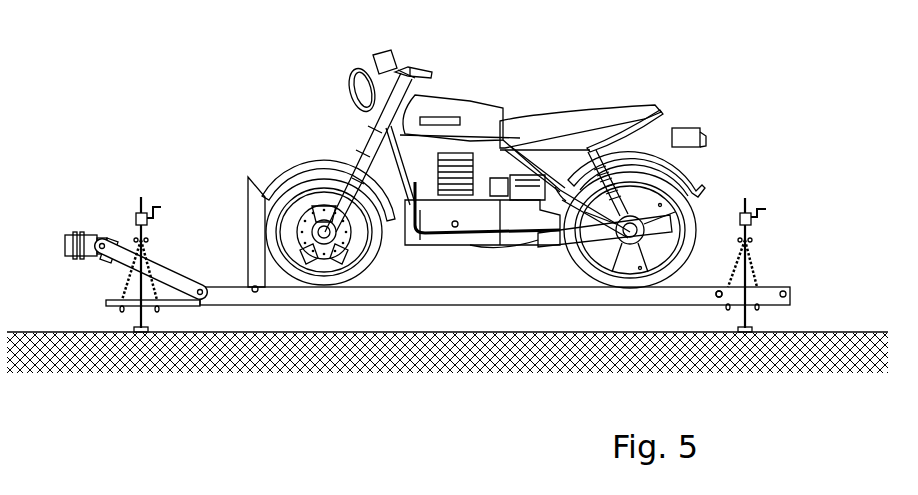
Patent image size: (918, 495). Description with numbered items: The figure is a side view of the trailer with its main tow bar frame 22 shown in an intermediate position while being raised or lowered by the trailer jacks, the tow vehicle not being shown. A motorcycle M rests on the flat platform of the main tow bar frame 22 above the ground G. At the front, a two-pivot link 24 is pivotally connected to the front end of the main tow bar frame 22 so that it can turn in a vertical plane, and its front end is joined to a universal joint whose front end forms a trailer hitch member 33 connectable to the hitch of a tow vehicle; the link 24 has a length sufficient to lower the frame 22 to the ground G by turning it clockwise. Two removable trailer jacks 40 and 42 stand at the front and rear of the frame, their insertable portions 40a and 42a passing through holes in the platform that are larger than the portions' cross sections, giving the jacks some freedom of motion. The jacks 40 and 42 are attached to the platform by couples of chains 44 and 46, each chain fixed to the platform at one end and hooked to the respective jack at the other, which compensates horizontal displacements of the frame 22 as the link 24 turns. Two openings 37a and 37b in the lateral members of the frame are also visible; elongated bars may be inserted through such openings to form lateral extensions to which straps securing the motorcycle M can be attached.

The main tow bar frame 22 is at (486, 295).
The ground G is at (19, 331).
The trailer hitch member 33 is at (67, 242).
The two-pivot link 24 is at (171, 263).
The removable trailer jack 40 is at (129, 216).
The insertable portion 40a is at (137, 317).
The chains 44 is at (122, 278).
The opening in lateral member 37a is at (253, 287).
The opening in lateral member 37b is at (718, 290).
The removable trailer jack 42 is at (768, 204).
The insertable portion 42a is at (747, 322).
The chains 46 is at (759, 255).
The motorcycle M is at (519, 108).